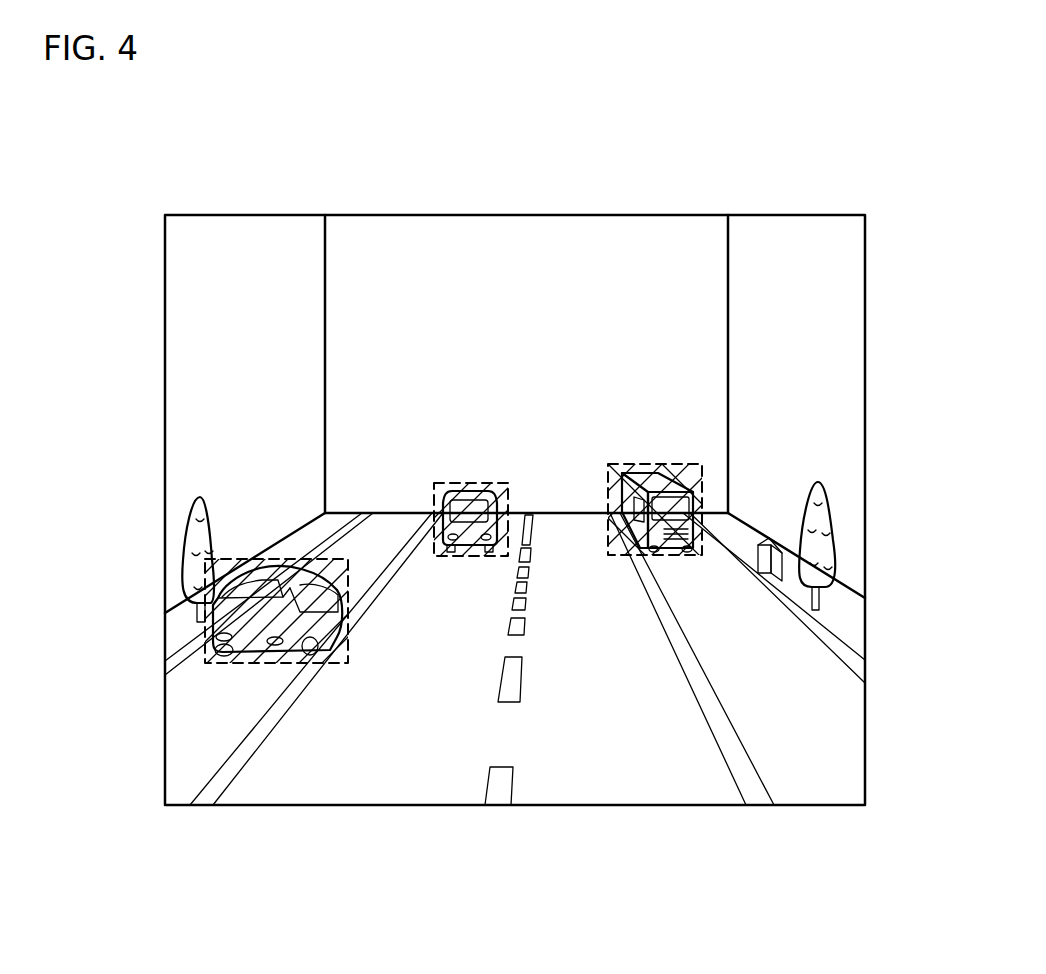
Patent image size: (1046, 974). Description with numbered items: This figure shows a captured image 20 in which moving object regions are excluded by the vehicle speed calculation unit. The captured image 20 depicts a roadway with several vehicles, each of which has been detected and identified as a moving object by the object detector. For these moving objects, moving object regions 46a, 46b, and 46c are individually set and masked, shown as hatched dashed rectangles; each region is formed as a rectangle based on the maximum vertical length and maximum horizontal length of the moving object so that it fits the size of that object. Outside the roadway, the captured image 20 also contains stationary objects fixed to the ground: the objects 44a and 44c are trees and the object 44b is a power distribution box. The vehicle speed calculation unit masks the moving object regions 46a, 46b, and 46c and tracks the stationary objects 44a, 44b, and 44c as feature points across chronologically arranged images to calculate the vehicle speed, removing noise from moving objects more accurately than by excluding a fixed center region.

The captured image 20 is at (866, 386).
The object 44a is at (835, 538).
The object 44b is at (762, 573).
The object 44c is at (188, 538).
The moving object region 46a is at (470, 483).
The moving object region 46b is at (653, 464).
The moving object region 46c is at (287, 558).